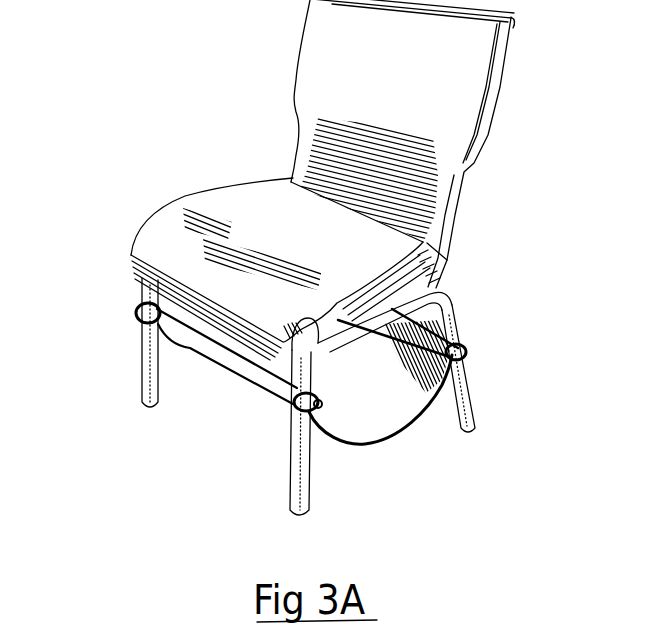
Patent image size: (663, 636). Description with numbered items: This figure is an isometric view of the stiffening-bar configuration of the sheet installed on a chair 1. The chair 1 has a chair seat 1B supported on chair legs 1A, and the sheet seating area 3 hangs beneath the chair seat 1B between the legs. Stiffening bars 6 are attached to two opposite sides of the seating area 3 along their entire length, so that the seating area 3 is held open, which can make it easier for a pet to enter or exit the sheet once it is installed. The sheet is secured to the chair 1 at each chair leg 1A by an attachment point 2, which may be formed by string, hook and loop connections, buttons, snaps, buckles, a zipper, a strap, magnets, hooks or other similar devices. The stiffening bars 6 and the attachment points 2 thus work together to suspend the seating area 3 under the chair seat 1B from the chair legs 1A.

The chair 1 is at (503, 90).
The chair leg 1A is at (141, 365).
The chair seat 1B is at (277, 234).
The attachment point 2 is at (138, 307).
The sheet seating area 3 is at (375, 432).
The stiffening bar 6 is at (208, 348).